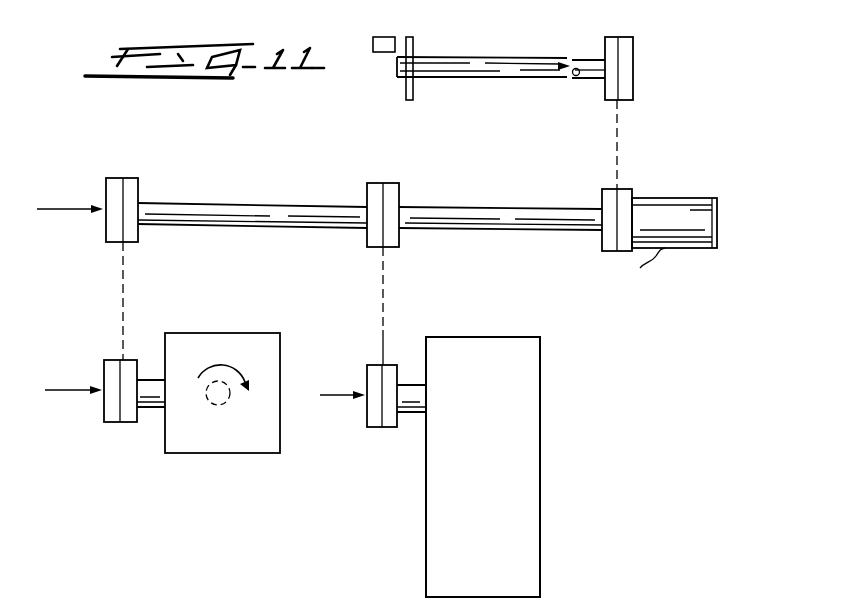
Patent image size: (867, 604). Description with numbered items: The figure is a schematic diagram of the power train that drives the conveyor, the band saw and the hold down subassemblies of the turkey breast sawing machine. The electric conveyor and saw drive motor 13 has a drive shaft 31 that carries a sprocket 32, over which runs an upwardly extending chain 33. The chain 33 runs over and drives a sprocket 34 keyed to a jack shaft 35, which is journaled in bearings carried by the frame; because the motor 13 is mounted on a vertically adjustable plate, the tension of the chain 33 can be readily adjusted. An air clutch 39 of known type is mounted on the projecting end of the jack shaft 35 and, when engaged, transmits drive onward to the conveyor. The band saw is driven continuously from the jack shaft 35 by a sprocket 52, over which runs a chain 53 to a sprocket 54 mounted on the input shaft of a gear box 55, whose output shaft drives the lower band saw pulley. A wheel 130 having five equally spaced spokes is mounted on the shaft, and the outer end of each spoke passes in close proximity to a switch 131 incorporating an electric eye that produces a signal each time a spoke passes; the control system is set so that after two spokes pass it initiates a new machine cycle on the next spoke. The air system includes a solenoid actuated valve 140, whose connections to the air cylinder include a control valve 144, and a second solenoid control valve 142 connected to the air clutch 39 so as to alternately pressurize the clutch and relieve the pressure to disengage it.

The conveyor and saw drive motor 13 is at (483, 467).
The drive shaft 31 is at (407, 412).
The sprocket 32 is at (367, 422).
The chain 33 is at (383, 275).
The sprocket 34 is at (399, 190).
The jack shaft 35 is at (473, 207).
The air clutch 39 is at (652, 198).
The sprocket 52 is at (138, 188).
The chain 53 is at (122, 279).
The sprocket 54 is at (130, 360).
The gear box 55 is at (233, 333).
The wheel 130 is at (413, 47).
The switch 131 is at (380, 52).
The solenoid actuated valve 140 is at (617, 158).
The solenoid control valve 142 is at (579, 60).
The control valve 144 is at (633, 50).